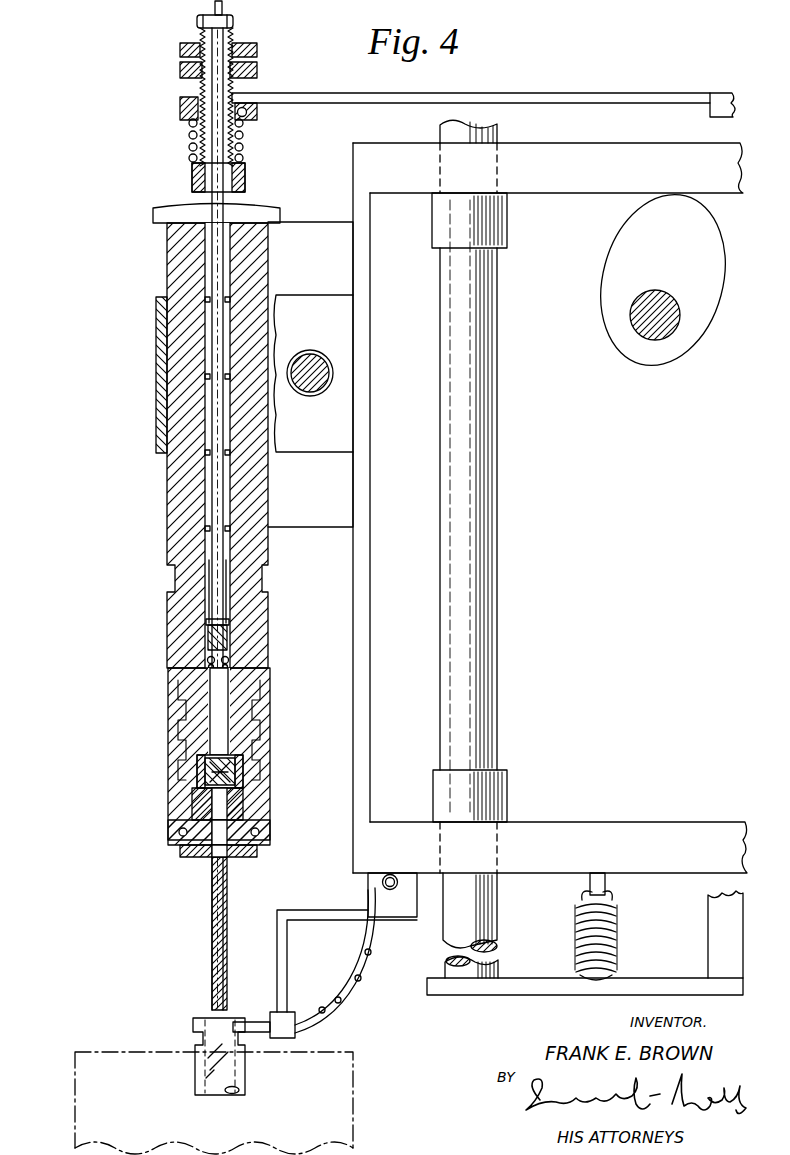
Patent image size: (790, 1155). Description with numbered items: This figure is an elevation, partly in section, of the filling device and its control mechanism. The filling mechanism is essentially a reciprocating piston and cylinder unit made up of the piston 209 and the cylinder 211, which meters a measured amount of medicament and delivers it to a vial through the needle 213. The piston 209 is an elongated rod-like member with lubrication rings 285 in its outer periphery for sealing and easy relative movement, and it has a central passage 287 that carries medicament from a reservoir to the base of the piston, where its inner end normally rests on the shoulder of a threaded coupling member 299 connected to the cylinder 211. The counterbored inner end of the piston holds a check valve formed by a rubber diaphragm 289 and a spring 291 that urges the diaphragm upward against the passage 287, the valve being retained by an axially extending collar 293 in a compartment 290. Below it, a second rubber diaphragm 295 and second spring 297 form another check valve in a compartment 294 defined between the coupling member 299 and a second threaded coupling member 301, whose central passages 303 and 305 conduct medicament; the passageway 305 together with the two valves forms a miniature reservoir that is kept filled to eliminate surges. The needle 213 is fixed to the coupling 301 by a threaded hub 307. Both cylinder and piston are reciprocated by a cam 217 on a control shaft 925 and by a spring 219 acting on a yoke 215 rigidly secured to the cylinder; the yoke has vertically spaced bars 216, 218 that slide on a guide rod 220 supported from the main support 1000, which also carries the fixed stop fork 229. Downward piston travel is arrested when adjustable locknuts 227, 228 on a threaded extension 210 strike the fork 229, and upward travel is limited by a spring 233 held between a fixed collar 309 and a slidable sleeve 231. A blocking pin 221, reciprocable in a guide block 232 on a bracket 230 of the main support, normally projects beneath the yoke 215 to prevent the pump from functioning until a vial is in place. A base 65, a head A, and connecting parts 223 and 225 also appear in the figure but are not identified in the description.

The workpiece base 65 is at (118, 1053).
The stylus head A is at (195, 1025).
The piston 209 is at (236, 201).
The threaded extension 210 is at (205, 92).
The cylinder 211 is at (168, 507).
The filling needle 213 is at (228, 902).
The yoke 215 is at (368, 558).
The bar 216 is at (553, 194).
The cam 217 is at (635, 275).
The bar 218 is at (540, 826).
The spring 219 is at (618, 930).
The guide rod 220 is at (497, 659).
The blocking pin 221 is at (390, 874).
The connector block 223 is at (296, 1030).
The connecting pin 225 is at (252, 1022).
The locknut 227 is at (258, 70).
The locknut 228 is at (238, 50).
The stop fork 229 is at (484, 104).
The bracket 230 is at (305, 915).
The slidable sleeve 231 is at (258, 113).
The guide block 232 is at (393, 900).
The spring 233 is at (189, 136).
The lubrication rings 285 is at (272, 490).
The central passage 287 is at (222, 593).
The rubber diaphragm 289 is at (226, 630).
The compartment 290 is at (216, 662).
The spring 291 is at (229, 662).
The collar 293 is at (207, 632).
The compartment 294 is at (202, 778).
The second rubber diaphragm 295 is at (240, 762).
The second spring 297 is at (234, 782).
The threaded coupling member 299 is at (195, 709).
The threaded coupling member 301 is at (170, 830).
The central passage 303 is at (226, 713).
The central passage 305 is at (244, 806).
The threaded hub 307 is at (258, 852).
The fixed collar 309 is at (244, 173).
The control shaft 925 is at (659, 332).
The main support 1000 is at (719, 116).